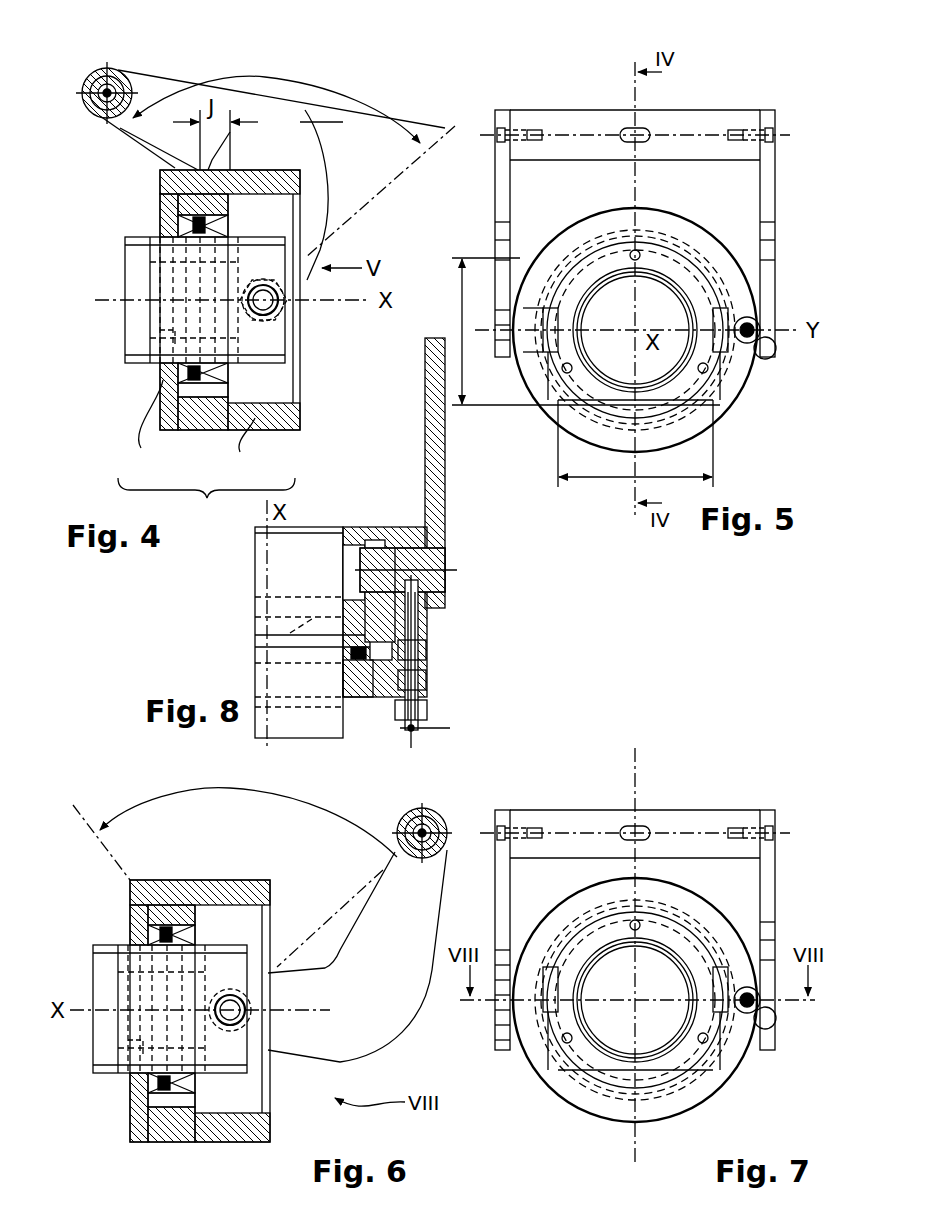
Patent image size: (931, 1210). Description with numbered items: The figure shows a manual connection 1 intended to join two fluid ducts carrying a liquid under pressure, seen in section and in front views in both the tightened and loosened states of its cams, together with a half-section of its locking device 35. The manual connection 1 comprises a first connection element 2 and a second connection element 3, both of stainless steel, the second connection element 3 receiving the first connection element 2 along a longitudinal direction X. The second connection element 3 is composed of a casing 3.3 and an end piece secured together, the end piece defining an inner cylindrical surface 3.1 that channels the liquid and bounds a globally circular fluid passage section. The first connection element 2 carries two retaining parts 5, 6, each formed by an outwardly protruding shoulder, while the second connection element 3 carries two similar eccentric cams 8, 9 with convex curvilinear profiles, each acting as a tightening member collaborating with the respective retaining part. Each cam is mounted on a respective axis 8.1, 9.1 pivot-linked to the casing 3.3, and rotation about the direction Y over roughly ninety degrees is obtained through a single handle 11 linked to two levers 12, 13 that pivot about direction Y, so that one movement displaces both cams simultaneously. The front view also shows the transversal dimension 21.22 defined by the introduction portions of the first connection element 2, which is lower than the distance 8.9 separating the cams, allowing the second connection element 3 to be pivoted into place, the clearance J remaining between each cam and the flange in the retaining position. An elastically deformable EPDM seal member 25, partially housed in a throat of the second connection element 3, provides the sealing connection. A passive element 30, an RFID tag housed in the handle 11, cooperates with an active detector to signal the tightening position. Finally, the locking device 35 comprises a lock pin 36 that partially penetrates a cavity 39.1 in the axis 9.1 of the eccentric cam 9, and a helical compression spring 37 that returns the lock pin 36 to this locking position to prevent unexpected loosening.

In FIG. 4, the manual connection 1 is at (75, 70).
In FIG. 5, the manual connection 1 is at (735, 100).
In FIG. 7, the manual connection 1 is at (735, 800).
In FIG. 6, the manual connection 1 is at (115, 805).
In FIG. 4, the first connection element 2 is at (235, 373).
In FIG. 6, the first connection element 2 is at (218, 1083).
In FIG. 4, the second connection element 3 is at (209, 350).
In FIG. 5, the second connection element 3 is at (703, 435).
In FIG. 7, the second connection element 3 is at (703, 1105).
In FIG. 6, the second connection element 3 is at (200, 1152).
In FIG. 4, the inner cylindrical surface 3.1 is at (142, 425).
In FIG. 4, the casing 3.3 is at (239, 446).
In FIG. 5, the retaining part 5 is at (528, 304).
In FIG. 8, the retaining part 6 is at (352, 600).
In FIG. 5, the retaining part 6 is at (762, 318).
In FIG. 7, the retaining part 6 is at (755, 1008).
In FIG. 4, the eccentric cam 8 is at (285, 340).
In FIG. 5, the eccentric cam 8 is at (548, 370).
In FIG. 7, the eccentric cam 8 is at (550, 1040).
In FIG. 6, the eccentric cam 8 is at (272, 1037).
In FIG. 5, the axis 8.1 is at (535, 360).
In FIG. 5, the eccentric cam 9 is at (730, 405).
In FIG. 7, the eccentric cam 9 is at (728, 1040).
In FIG. 8, the axis 9.1 is at (447, 560).
In FIG. 5, the axis 9.1 is at (752, 358).
In FIG. 4, the handle 11 is at (92, 115).
In FIG. 5, the handle 11 is at (582, 128).
In FIG. 7, the handle 11 is at (582, 828).
In FIG. 6, the handle 11 is at (413, 816).
In FIG. 4, the lever 12 is at (152, 97).
In FIG. 5, the lever 12 is at (500, 186).
In FIG. 7, the lever 12 is at (500, 886).
In FIG. 6, the lever 12 is at (413, 898).
In FIG. 8, the lever 13 is at (428, 415).
In FIG. 5, the lever 13 is at (768, 186).
In FIG. 7, the lever 13 is at (768, 886).
In FIG. 4, the seal member 25 is at (185, 215).
In FIG. 8, the seal member 25 is at (362, 690).
In FIG. 6, the seal member 25 is at (171, 1009).
In FIG. 4, the passive element 30 is at (107, 80).
In FIG. 5, the passive element 30 is at (630, 128).
In FIG. 7, the passive element 30 is at (630, 826).
In FIG. 8, the locking device 35 is at (447, 660).
In FIG. 8, the lock pin 36 is at (427, 626).
In FIG. 8, the spring 37 is at (422, 716).
In FIG. 8, the cavity 39.1 is at (422, 612).
In FIG. 5, the transversal dimension 21.22 is at (562, 331).
In FIG. 5, the distance 8.9 is at (635, 451).